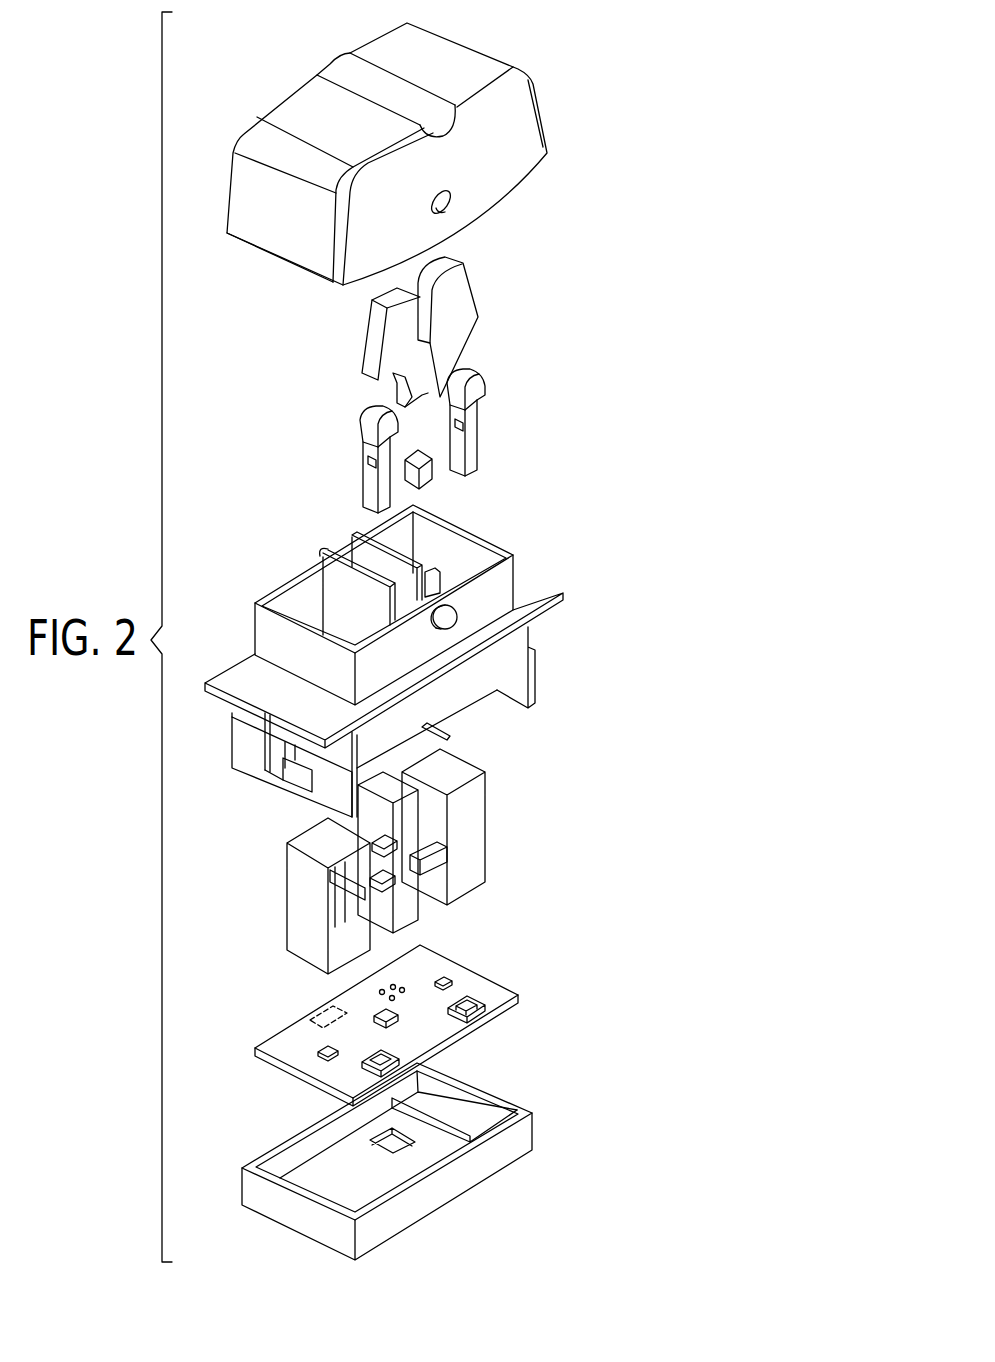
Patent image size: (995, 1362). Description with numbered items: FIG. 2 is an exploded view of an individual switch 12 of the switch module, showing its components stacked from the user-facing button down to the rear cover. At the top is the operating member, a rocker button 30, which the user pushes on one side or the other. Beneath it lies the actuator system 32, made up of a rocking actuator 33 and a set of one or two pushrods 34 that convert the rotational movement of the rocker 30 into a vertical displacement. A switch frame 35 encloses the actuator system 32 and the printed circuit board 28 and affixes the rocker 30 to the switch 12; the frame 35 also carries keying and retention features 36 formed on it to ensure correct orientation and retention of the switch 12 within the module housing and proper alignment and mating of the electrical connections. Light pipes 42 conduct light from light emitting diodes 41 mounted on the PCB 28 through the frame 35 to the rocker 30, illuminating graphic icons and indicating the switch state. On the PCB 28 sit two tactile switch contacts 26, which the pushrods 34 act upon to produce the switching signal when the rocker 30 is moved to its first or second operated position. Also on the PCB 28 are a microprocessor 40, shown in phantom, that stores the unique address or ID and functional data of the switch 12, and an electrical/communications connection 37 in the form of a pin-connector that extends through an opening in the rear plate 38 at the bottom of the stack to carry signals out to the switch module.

The switch 12 is at (693, 222).
The tactile switch contact 26 is at (400, 1050).
The printed circuit board 28 is at (294, 1052).
The rocker button 30 is at (561, 48).
The actuator system 32 is at (511, 343).
The rocking actuator 33 is at (460, 300).
The pushrod 34 is at (470, 433).
The switch frame 35 is at (530, 597).
The keying and retention features 36 is at (283, 748).
The electrical/communications connection 37 is at (378, 992).
The rear plate 38 is at (458, 1178).
The microprocessor 40 is at (314, 1020).
The light emitting diode 41 is at (398, 1012).
The light pipe 42 is at (541, 822).